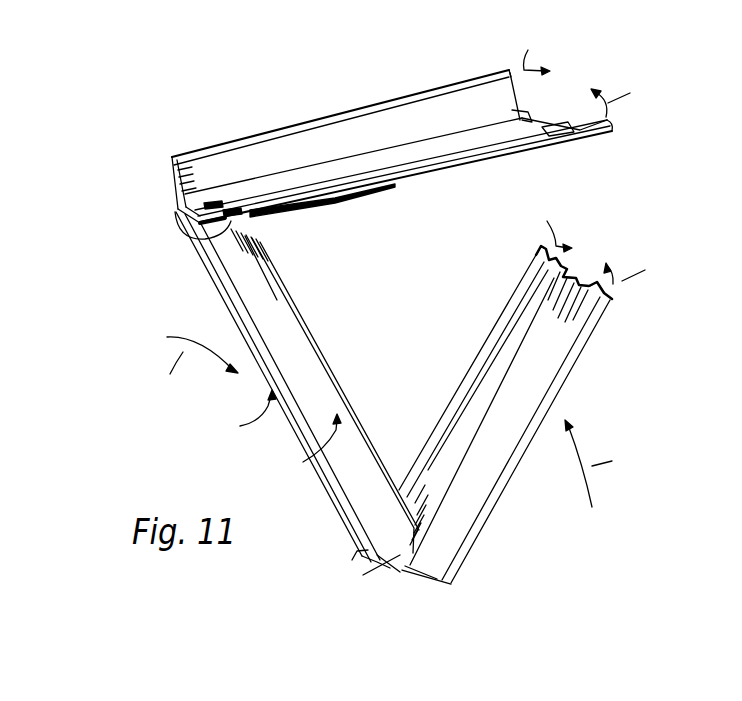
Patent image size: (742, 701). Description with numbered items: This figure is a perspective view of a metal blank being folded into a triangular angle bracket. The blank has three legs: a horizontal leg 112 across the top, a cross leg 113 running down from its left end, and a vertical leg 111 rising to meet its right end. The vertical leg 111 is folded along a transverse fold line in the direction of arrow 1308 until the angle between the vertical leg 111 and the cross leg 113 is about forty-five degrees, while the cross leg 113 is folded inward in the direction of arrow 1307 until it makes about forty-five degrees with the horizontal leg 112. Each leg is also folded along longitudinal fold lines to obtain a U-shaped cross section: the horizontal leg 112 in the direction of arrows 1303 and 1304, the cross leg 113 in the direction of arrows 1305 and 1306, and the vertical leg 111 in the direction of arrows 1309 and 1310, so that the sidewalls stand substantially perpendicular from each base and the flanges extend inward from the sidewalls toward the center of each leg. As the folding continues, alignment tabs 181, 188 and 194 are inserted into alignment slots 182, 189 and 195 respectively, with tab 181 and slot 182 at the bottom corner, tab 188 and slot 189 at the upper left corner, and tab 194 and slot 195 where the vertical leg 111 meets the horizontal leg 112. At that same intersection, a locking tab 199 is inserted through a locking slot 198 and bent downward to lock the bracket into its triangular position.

The vertical leg 111 is at (579, 365).
The horizontal leg 112 is at (358, 108).
The cross leg 113 is at (214, 289).
The alignment tab 181 is at (352, 560).
The alignment slot 182 is at (408, 557).
The alignment tab 188 is at (176, 213).
The alignment slot 189 is at (233, 210).
The alignment tab 194 is at (536, 256).
The alignment slot 195 is at (503, 122).
The locking slot 198 is at (488, 133).
The locking tab 199 is at (566, 268).
The arrow 1303 is at (526, 47).
The arrow 1304 is at (638, 100).
The arrow 1305 is at (229, 415).
The arrow 1306 is at (299, 453).
The arrow 1307 is at (181, 367).
The arrow 1308 is at (616, 463).
The arrow 1309 is at (543, 226).
The arrow 1310 is at (652, 268).